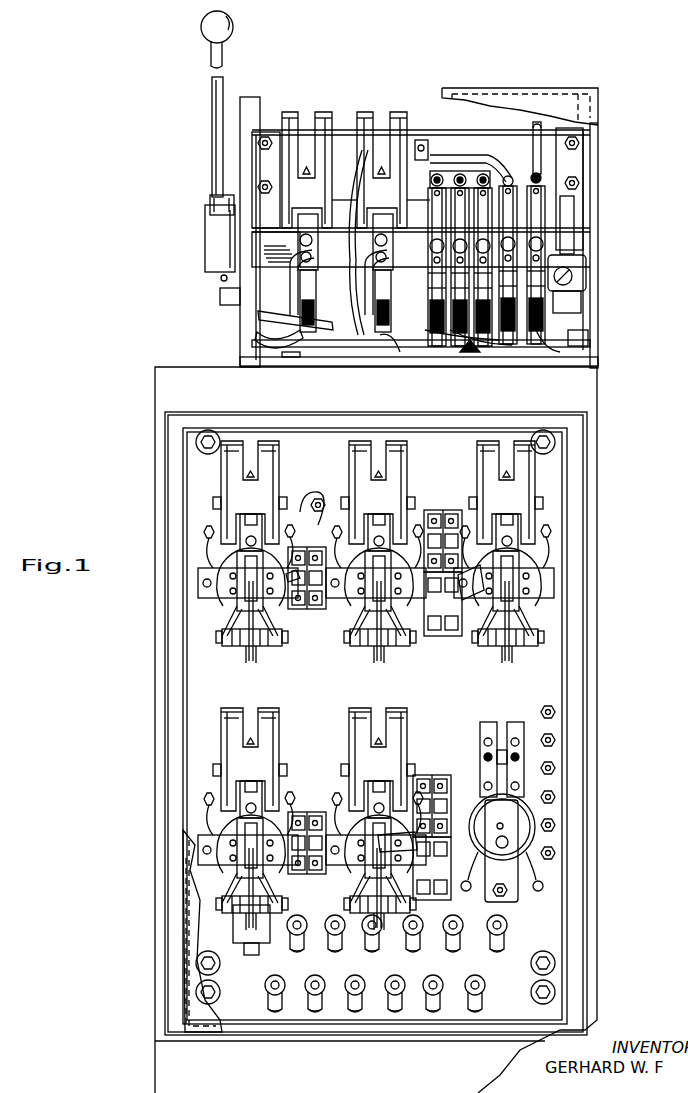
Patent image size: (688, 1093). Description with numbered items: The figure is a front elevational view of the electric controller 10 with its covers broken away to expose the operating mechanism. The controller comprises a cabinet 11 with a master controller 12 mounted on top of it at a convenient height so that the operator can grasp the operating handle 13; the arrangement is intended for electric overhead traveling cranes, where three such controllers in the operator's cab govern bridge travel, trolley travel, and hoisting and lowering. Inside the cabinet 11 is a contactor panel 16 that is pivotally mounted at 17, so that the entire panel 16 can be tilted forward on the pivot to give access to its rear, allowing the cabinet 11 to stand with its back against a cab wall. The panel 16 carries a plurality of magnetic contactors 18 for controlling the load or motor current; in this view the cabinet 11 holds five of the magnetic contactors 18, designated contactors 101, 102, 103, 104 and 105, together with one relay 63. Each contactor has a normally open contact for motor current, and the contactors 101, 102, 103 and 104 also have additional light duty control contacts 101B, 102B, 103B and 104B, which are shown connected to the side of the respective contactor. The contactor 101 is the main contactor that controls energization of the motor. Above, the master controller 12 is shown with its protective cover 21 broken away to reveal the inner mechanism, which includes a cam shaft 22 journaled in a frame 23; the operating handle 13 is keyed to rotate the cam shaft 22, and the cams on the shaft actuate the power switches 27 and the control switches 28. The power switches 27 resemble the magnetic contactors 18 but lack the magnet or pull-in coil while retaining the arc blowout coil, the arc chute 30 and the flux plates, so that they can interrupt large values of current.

The electric controller 10 is at (155, 423).
The cabinet 11 is at (353, 723).
The master controller 12 is at (592, 186).
The operating handle 13 is at (212, 108).
The contactor panel 16 is at (556, 664).
The pivot 17 is at (200, 990).
The magnetic contactors 18 is at (225, 645).
The protective cover 21 is at (551, 104).
The cam shaft 22 is at (268, 238).
The frame 23 is at (246, 318).
The power switches 27 is at (318, 118).
The control switches 28 is at (532, 172).
The arc chute 30 is at (372, 118).
The relay 63 is at (520, 766).
The main contactor 101 is at (268, 470).
The control contact of contactor 101 101B is at (292, 612).
The magnetic contactor 102 is at (482, 467).
The control contact of contactor 102 102B is at (462, 638).
The magnetic contactor 103 is at (396, 726).
The control contact of contactor 103 103B is at (432, 792).
The magnetic contactor 104 is at (275, 722).
The control contact of contactor 104 104B is at (305, 808).
The magnetic contactor 105 is at (390, 478).